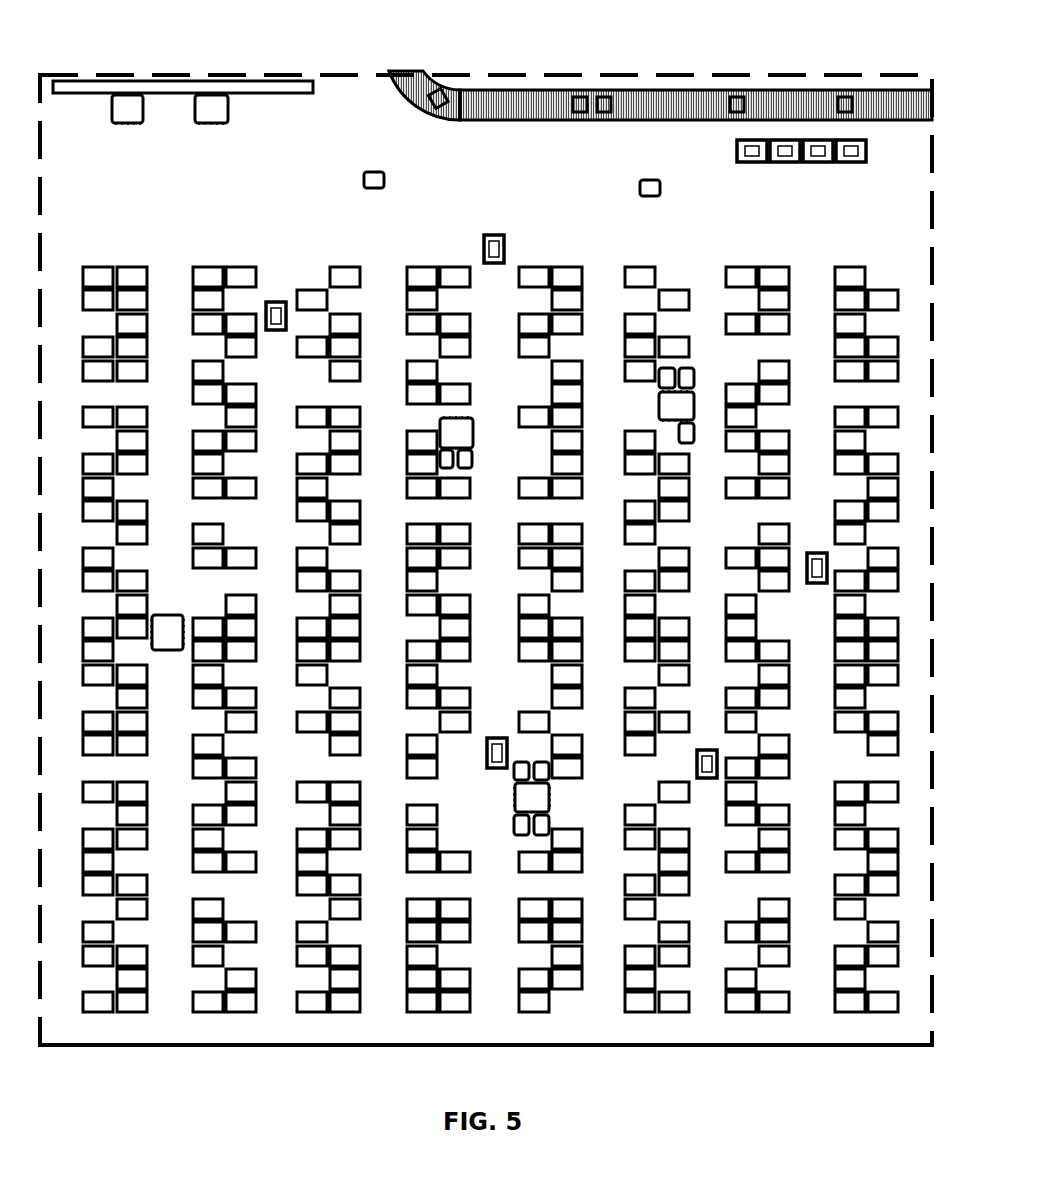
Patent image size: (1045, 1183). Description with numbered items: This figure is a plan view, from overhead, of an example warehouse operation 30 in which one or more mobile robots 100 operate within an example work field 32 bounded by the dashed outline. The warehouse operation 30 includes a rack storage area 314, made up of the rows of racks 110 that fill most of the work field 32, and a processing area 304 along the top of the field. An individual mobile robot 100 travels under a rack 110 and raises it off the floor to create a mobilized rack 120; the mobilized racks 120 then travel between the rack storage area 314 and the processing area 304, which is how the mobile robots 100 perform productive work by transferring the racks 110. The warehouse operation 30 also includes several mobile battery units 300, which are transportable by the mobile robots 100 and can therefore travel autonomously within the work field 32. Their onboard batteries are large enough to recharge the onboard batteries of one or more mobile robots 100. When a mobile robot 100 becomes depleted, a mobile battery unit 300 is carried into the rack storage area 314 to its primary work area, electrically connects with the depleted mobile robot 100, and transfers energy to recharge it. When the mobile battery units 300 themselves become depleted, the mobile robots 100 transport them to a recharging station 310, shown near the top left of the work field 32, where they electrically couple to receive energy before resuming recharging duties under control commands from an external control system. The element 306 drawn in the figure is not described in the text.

The warehouse operation 30 is at (803, 65).
The work field 32 is at (660, 1049).
The mobile robot 100 is at (376, 188).
The rack 110 is at (491, 597).
The mobilized rack 120 is at (760, 162).
The mobile battery unit 300 is at (129, 124).
The processing area 304 is at (705, 166).
The conveyor 306 is at (565, 121).
The recharging station 310 is at (317, 95).
The rack storage area 314 is at (118, 242).